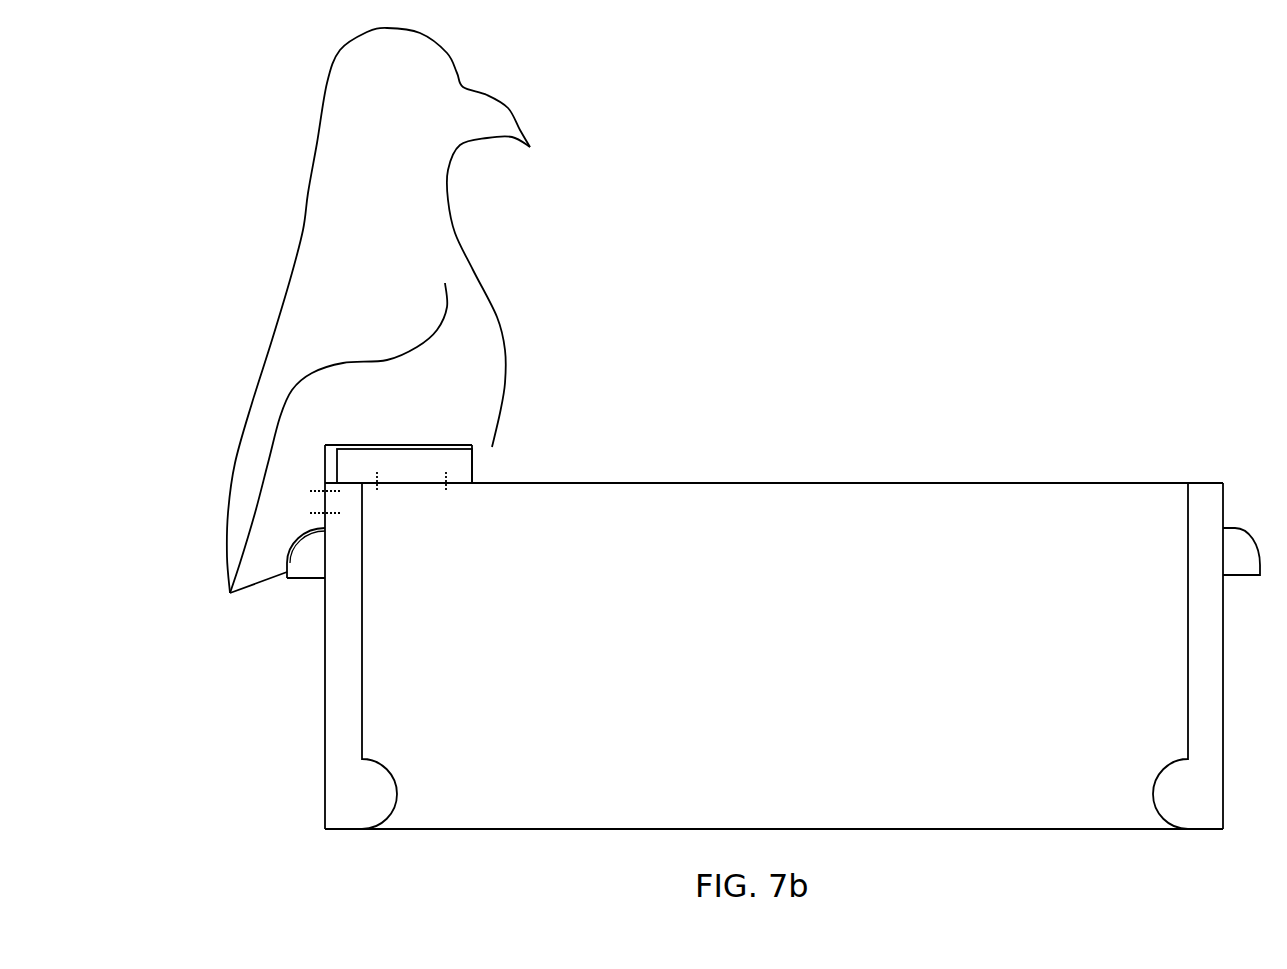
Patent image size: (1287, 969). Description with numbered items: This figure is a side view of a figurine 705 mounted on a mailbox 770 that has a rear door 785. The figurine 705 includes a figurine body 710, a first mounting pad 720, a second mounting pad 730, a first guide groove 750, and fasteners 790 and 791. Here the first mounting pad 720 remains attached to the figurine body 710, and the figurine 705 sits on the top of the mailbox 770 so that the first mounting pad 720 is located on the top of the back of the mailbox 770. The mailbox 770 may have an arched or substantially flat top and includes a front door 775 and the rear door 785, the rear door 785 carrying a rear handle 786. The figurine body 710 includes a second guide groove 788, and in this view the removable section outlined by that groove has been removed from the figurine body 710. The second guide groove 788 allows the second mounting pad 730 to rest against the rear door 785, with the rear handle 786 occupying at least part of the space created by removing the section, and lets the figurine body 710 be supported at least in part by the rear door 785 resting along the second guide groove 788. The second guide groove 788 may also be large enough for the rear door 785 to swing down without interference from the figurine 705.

The figurine 705 is at (282, 98).
The figurine body 710 is at (303, 232).
The first mounting pad 720 is at (473, 465).
The first guide groove 750 is at (473, 447).
The second mounting pad 730 is at (318, 503).
The second guide groove 788 is at (292, 543).
The rear handle 786 is at (307, 580).
The rear door 785 is at (323, 687).
The front door 775 is at (1197, 682).
The mailbox 770 is at (798, 828).
The fastener 790 is at (377, 491).
The fastener 791 is at (337, 493).